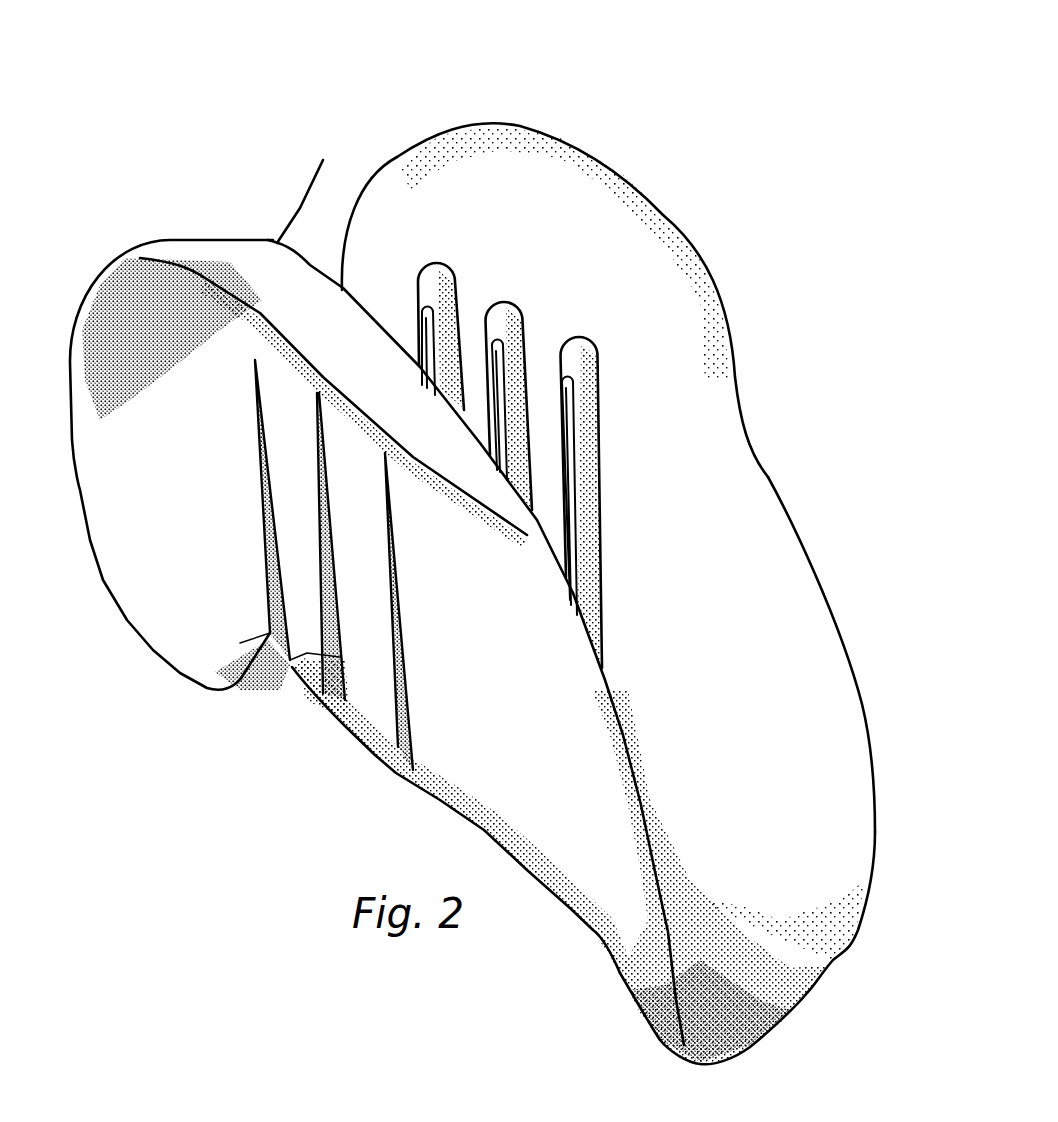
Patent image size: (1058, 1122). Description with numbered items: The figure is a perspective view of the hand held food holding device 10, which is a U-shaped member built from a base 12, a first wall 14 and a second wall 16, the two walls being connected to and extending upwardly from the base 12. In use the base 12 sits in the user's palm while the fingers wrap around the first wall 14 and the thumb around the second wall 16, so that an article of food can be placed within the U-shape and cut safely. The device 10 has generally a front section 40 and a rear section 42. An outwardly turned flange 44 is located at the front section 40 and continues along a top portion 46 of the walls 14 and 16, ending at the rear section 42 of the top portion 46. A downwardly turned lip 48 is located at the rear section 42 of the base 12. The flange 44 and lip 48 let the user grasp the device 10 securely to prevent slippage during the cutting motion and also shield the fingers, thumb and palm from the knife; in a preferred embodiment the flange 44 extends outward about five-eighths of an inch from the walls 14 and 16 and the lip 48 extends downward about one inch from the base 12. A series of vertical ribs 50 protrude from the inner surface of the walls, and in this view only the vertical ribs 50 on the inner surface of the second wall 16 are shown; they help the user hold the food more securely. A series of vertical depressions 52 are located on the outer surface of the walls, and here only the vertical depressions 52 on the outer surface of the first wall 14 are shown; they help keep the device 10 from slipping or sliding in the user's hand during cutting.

The hand held food holding device 10 is at (537, 83).
The base 12 is at (525, 892).
The first wall 14 is at (505, 760).
The second wall 16 is at (770, 470).
The front section 40 is at (290, 188).
The rear section 42 is at (813, 1031).
The outwardly turned flange 44 is at (548, 160).
The top portion 46 is at (433, 180).
The downwardly turned lip 48 is at (797, 973).
The vertical ribs 50 is at (563, 327).
The vertical depressions 52 is at (400, 690).